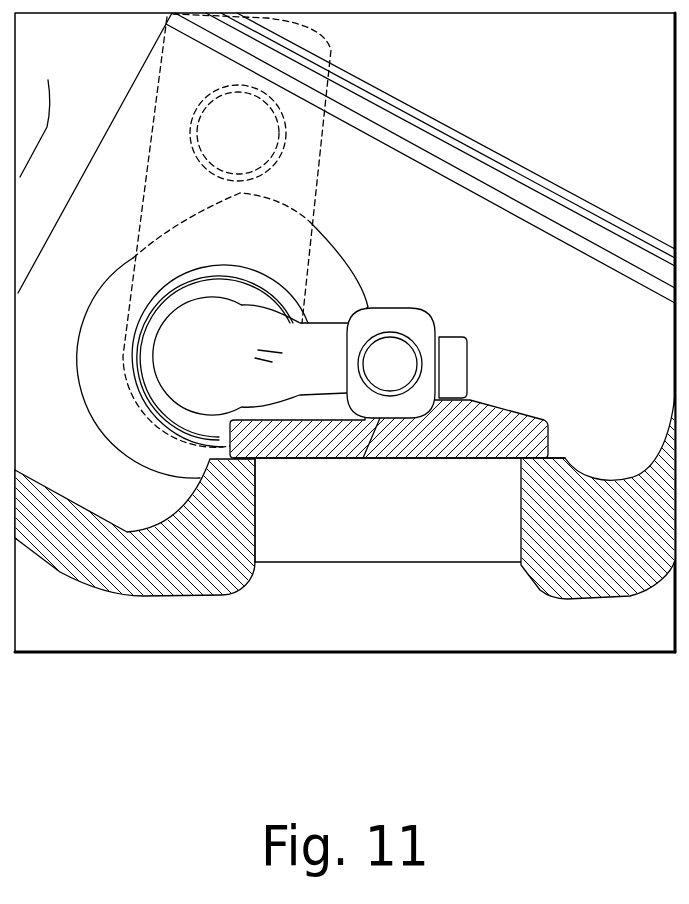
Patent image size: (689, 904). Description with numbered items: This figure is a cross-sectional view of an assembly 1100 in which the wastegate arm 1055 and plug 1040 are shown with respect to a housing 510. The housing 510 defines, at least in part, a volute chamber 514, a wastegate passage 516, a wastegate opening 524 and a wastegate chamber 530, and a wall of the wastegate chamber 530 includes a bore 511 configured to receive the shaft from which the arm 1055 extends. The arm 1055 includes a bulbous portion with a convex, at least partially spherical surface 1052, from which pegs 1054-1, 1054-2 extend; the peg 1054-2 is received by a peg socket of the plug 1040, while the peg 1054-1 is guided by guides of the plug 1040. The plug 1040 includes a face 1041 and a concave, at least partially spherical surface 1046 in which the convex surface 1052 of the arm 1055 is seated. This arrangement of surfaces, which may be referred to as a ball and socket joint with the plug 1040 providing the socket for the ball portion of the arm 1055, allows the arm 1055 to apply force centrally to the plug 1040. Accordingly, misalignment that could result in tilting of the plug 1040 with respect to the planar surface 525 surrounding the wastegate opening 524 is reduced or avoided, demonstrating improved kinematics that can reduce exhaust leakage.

The hinge assembly 1100 is at (76, 46).
The bore 511 is at (137, 337).
The arm portion 1055 is at (234, 366).
The convex, at least partially spherical surface 1052 is at (350, 397).
The peg 1054-2 is at (403, 350).
The peg 1054-1 is at (463, 367).
The wastegate chamber 530 is at (554, 285).
The plug 1040 is at (520, 433).
The planar surface 525 is at (556, 457).
The concave, at least partially spherical surface 1046 is at (378, 422).
The face 1041 is at (402, 459).
The wastegate opening 524 is at (258, 466).
The wastegate passage 516 is at (257, 563).
The housing 510 is at (609, 546).
The volute chamber 514 is at (492, 621).